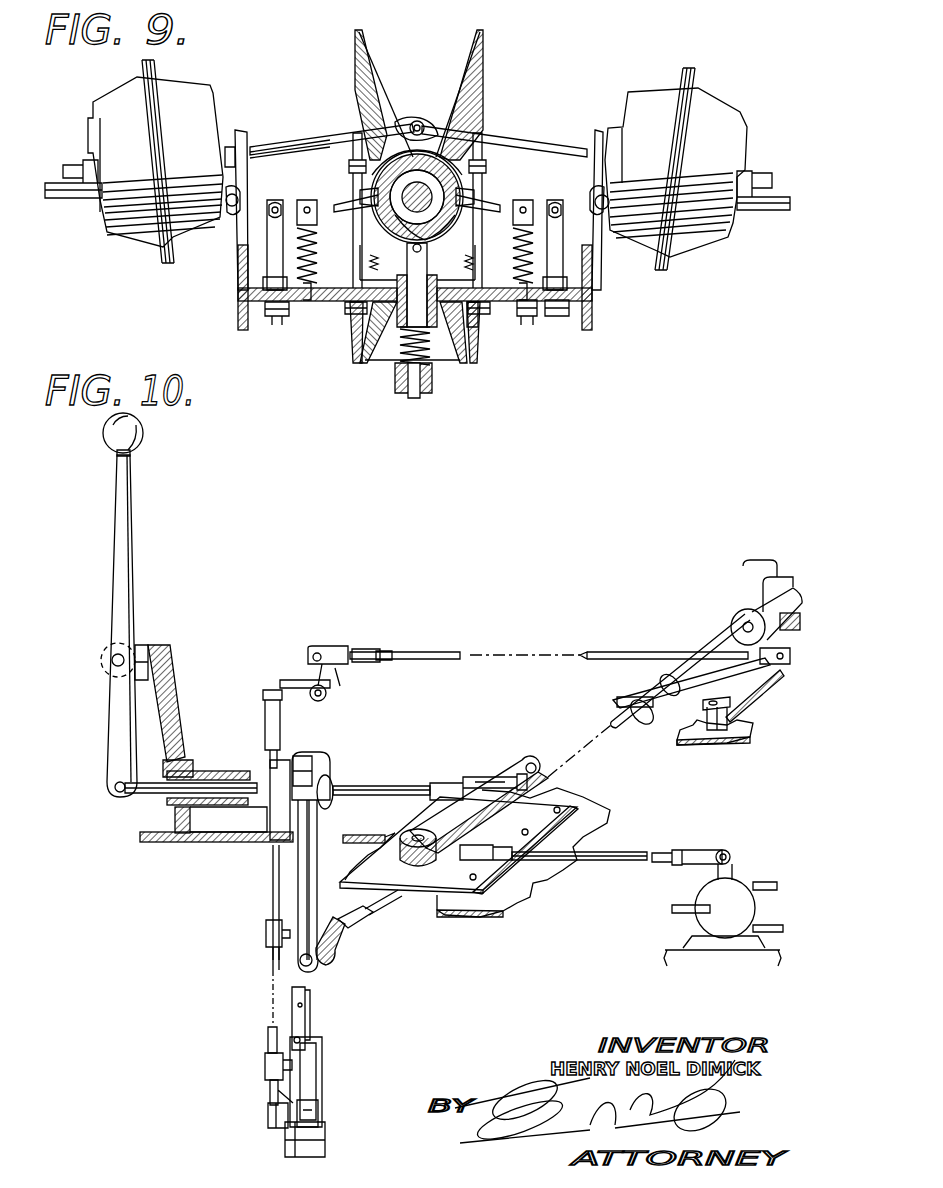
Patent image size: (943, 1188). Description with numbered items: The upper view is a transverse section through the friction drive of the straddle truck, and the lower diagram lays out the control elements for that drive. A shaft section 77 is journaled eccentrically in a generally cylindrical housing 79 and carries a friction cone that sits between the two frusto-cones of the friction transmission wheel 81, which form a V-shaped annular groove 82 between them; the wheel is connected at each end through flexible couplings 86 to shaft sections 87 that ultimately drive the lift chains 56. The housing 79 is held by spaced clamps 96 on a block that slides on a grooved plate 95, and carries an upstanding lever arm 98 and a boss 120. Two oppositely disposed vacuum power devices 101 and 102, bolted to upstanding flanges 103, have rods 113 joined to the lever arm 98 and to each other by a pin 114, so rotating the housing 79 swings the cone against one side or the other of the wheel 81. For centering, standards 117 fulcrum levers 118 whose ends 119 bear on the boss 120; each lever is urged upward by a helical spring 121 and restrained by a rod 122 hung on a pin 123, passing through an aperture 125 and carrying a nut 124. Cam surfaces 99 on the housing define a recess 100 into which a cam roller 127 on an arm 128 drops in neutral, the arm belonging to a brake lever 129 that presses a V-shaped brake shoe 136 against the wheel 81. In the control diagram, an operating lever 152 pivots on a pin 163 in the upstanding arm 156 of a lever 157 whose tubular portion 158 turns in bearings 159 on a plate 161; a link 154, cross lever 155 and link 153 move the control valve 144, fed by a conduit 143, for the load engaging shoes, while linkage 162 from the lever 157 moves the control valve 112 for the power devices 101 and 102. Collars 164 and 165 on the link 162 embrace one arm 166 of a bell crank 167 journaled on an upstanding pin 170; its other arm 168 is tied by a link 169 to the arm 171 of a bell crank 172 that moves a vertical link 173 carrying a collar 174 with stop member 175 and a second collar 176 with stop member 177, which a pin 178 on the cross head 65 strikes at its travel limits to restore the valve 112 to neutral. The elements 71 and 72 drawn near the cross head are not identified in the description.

In FIG. 9, the vacuum power device 101 is at (125, 78).
In FIG. 9, the vacuum power device 102 is at (712, 90).
In FIG. 9, the shaft section 87 is at (62, 200).
In FIG. 9, the flexible coupling 86 is at (230, 215).
In FIG. 9, the upstanding flange 103 is at (240, 128).
In FIG. 9, the V-shaped annular groove 82 is at (378, 56).
In FIG. 9, the friction transmission wheel 81 is at (483, 35).
In FIG. 9, the rod 113 is at (292, 145).
In FIG. 9, the lever 118 is at (330, 142).
In FIG. 9, the pin 114 is at (412, 124).
In FIG. 9, the lever arm 98 is at (352, 132).
In FIG. 9, the boss 120 is at (485, 158).
In FIG. 9, the housing 79 is at (443, 153).
In FIG. 9, the shaft section 77 is at (430, 180).
In FIG. 9, the clamp 96 is at (447, 167).
In FIG. 9, the end of lever 119 is at (478, 200).
In FIG. 9, the standard 117 is at (265, 270).
In FIG. 9, the pin 123 is at (308, 200).
In FIG. 9, the recess 100 is at (407, 250).
In FIG. 9, the cam surface 99 is at (398, 240).
In FIG. 9, the cam roller 127 is at (440, 245).
In FIG. 9, the helical spring 121 is at (284, 316).
In FIG. 9, the nut 124 is at (520, 318).
In FIG. 9, the aperture 125 is at (552, 318).
In FIG. 9, the rod 122 is at (505, 320).
In FIG. 9, the grooved plate 95 is at (332, 305).
In FIG. 9, the brake shoe 136 is at (470, 365).
In FIG. 9, the arm 128 is at (398, 338).
In FIG. 9, the lever 129 is at (435, 378).
In FIG. 10, the operating lever 152 is at (135, 553).
In FIG. 10, the pin 163 is at (110, 660).
In FIG. 10, the lever 157 is at (160, 645).
In FIG. 10, the upstanding arm 156 is at (172, 683).
In FIG. 10, the tubular portion 158 is at (240, 771).
In FIG. 10, the bearing 159 is at (175, 812).
In FIG. 10, the plate 161 is at (240, 842).
In FIG. 10, the link 154 is at (396, 789).
In FIG. 10, the cross lever 155 is at (440, 823).
In FIG. 10, the arm 171 is at (348, 668).
In FIG. 10, the bell crank 172 is at (330, 690).
In FIG. 10, the link 173 is at (282, 736).
In FIG. 10, the link 169 is at (462, 651).
In FIG. 10, the stop member 175 is at (275, 870).
In FIG. 10, the collar 174 is at (266, 940).
In FIG. 10, the linkage 162 is at (360, 920).
In FIG. 10, the collar 164 is at (625, 705).
In FIG. 10, the collar 165 is at (662, 683).
In FIG. 10, the arm 166 is at (693, 697).
In FIG. 10, the bell crank 167 is at (735, 712).
In FIG. 10, the upstanding pin 170 is at (748, 690).
In FIG. 10, the arm 168 is at (735, 627).
In FIG. 10, the control valve 112 is at (750, 610).
In FIG. 10, the link 153 is at (590, 865).
In FIG. 10, the control valve 144 is at (738, 880).
In FIG. 10, the conduit 143 is at (680, 914).
In FIG. 10, the lift chain 56 is at (310, 1001).
In FIG. 10, the cross head 65 is at (318, 1080).
In FIG. 10, the slide 71 is at (318, 1115).
In FIG. 10, the block 72 is at (325, 1140).
In FIG. 10, the second collar 176 is at (265, 1070).
In FIG. 10, the pin 178 is at (268, 1100).
In FIG. 10, the stop member 177 is at (270, 1128).